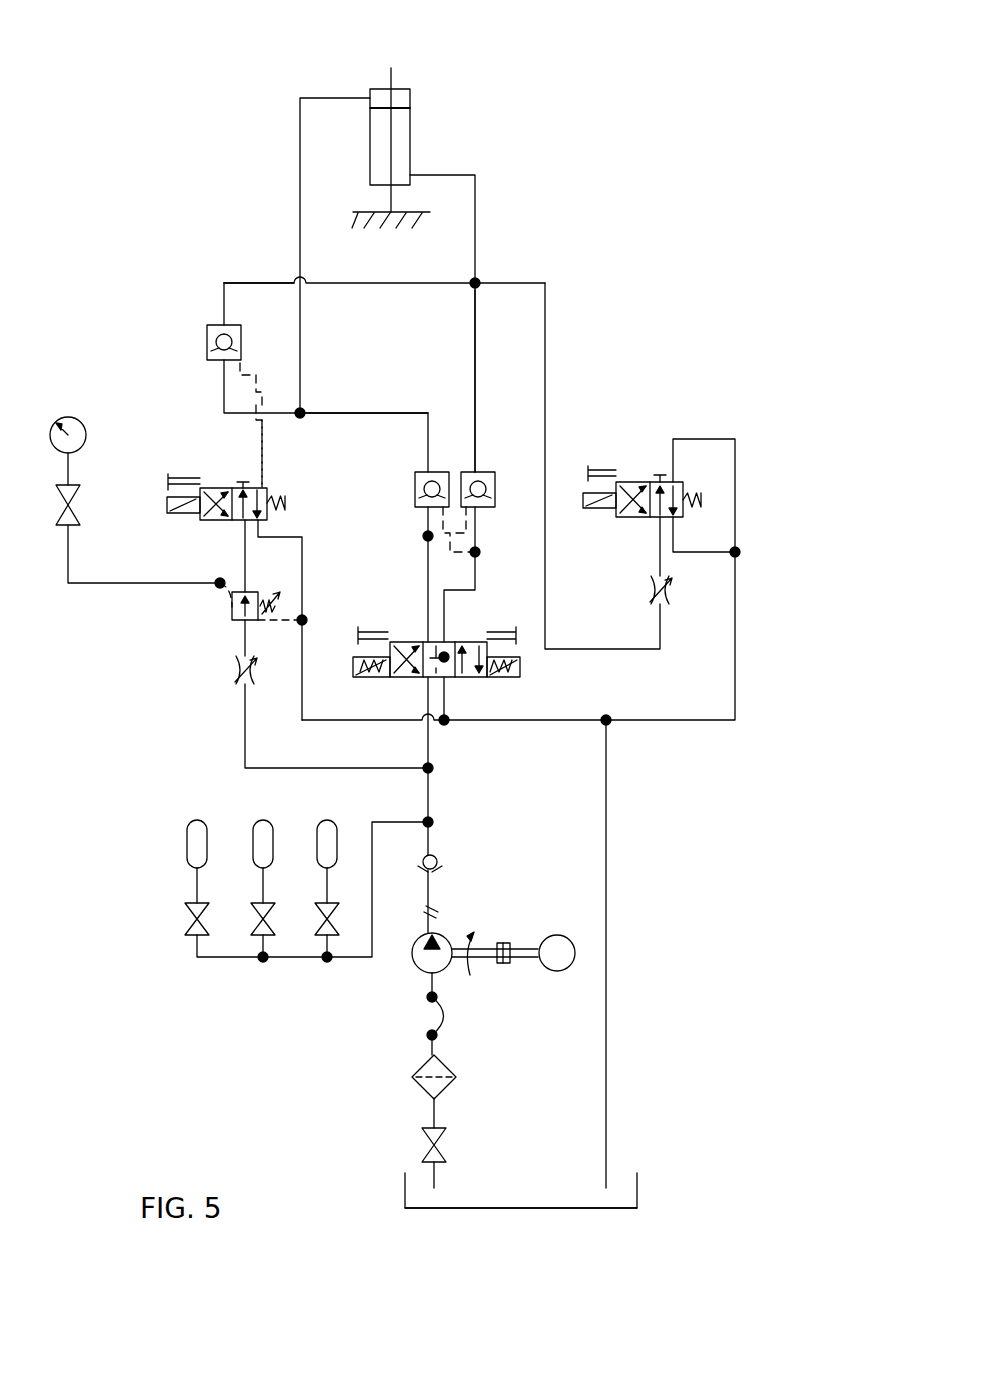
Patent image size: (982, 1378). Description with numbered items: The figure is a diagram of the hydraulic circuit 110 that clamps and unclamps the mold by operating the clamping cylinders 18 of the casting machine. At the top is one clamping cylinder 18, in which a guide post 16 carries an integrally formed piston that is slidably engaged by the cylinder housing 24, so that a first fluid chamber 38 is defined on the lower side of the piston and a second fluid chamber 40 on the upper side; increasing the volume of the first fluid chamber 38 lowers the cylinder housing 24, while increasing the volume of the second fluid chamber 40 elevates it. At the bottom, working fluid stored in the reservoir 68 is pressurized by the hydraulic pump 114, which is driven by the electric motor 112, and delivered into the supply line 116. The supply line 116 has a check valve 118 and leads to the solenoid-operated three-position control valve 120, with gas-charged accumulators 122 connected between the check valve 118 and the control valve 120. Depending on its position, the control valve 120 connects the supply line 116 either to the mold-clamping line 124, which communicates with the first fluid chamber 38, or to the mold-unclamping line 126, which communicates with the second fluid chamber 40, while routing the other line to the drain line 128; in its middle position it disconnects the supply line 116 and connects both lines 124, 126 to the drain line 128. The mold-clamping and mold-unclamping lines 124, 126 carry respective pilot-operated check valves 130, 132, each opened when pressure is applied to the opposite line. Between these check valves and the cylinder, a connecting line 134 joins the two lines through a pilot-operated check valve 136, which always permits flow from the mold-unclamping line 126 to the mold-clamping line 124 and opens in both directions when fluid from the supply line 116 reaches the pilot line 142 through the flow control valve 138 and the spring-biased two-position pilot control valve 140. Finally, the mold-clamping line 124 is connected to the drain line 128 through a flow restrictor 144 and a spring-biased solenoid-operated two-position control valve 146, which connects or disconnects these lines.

The clamping cylinder 18 is at (425, 82).
The guide post 16 is at (392, 138).
The cylinder housing 24 is at (412, 121).
The first fluid chamber 38 is at (402, 153).
The second fluid chamber 40 is at (382, 92).
The reservoir 68 is at (640, 1195).
The hydraulic circuit 110 is at (153, 1045).
The electric motor 112 is at (557, 972).
The hydraulic pump 114 is at (414, 963).
The supply line 116 is at (434, 790).
The check valve 118 is at (438, 858).
The 3-position control valve 120 is at (360, 625).
The gas-charged accumulators 122 is at (197, 820).
The mold-clamping line 124 is at (475, 365).
The mold-unclamping line 126 is at (348, 412).
The drain line 128 is at (607, 850).
The pilot-operated check valve 130 is at (500, 462).
The pilot-operated check valve 132 is at (415, 490).
The connecting line 134 is at (246, 282).
The pilot-operated check valve 136 is at (207, 335).
The flow control valve 138 is at (216, 650).
The 2-position pilot control valve 140 is at (197, 470).
The pilot line 142 is at (262, 447).
The flow restrictor 144 is at (650, 590).
The 2-position control valve 146 is at (636, 465).